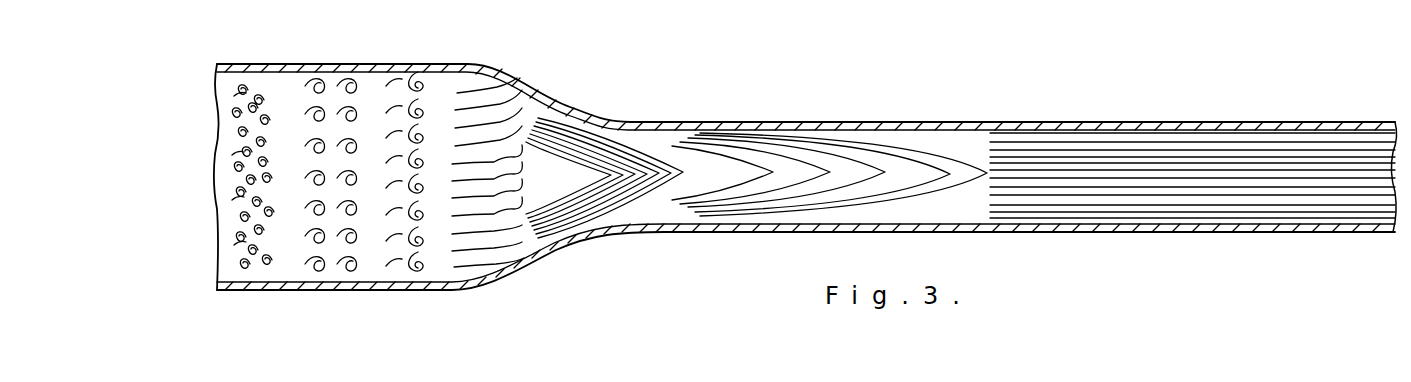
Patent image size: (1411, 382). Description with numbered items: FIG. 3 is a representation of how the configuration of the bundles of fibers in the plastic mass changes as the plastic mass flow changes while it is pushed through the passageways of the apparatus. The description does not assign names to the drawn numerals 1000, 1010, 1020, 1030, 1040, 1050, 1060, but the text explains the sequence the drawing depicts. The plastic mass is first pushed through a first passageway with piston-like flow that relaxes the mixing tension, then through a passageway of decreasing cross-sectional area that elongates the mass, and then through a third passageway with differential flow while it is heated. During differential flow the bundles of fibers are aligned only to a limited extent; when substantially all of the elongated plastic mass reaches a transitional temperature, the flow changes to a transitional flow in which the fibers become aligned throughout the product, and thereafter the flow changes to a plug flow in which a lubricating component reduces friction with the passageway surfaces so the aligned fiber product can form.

The housing / sheath tube 1000 is at (221, 76).
The loose curled fibers 1010 is at (265, 82).
The coiled fibers 1020 is at (348, 264).
The partially straightened coiled fibers 1030 is at (434, 78).
The wavy aligning fibers 1040 is at (516, 254).
The converging fibers in tapered section 1050 is at (614, 148).
The straightened parallel fibers 1060 is at (1143, 137).